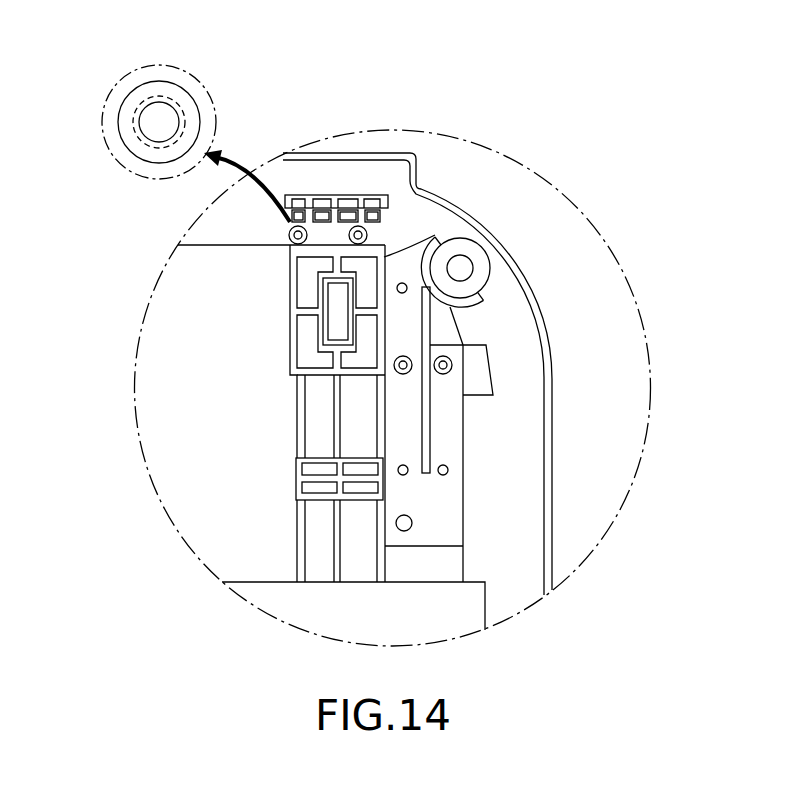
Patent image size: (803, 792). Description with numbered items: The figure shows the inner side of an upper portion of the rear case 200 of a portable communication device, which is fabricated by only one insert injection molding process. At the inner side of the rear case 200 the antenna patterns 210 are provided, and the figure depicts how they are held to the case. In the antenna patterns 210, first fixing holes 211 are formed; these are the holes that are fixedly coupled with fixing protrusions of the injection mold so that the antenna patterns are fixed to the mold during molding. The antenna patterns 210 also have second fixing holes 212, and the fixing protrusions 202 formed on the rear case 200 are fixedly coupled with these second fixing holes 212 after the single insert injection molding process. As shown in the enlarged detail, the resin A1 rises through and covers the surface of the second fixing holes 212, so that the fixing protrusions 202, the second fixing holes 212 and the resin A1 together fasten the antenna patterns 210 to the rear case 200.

The rear case 200 is at (530, 281).
The antenna patterns 210 is at (470, 512).
The first fixing holes 211 is at (402, 283).
The second fixing holes 212 is at (358, 226).
The fixing protrusions 202 is at (150, 98).
The resin A1 is at (178, 83).